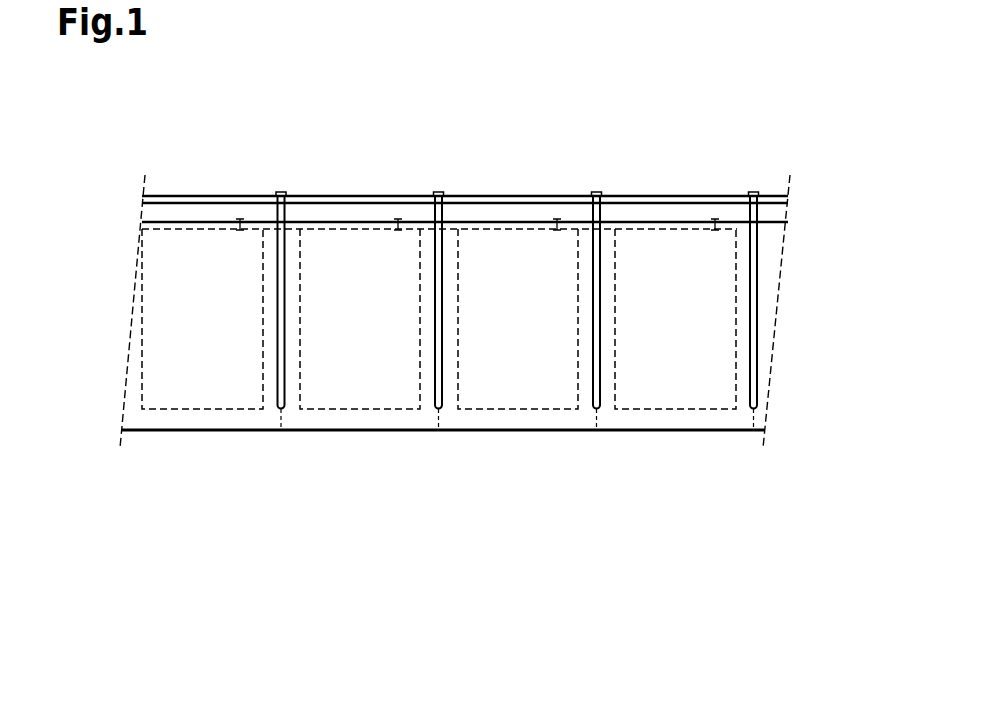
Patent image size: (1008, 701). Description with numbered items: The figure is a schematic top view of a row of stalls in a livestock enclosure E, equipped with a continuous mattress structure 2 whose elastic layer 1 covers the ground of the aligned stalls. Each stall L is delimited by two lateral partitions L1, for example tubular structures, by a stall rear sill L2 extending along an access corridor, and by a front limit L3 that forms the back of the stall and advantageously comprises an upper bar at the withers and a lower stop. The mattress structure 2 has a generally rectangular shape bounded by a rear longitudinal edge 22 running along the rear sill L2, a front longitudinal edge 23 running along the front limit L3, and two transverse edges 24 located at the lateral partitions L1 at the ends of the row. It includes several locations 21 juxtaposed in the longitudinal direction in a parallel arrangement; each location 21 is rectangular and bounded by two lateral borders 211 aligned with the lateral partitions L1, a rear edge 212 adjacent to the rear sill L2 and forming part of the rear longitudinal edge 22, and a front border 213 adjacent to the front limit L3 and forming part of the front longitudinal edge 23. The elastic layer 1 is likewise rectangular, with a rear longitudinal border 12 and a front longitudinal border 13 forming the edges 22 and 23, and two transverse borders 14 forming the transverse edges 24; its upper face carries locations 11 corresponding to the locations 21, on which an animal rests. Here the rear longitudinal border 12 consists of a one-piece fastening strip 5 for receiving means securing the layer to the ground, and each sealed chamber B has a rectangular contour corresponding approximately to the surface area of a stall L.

The front longitudinal edge 23 is at (465, 163).
The front limit L3 is at (465, 163).
The front longitudinal border 13 is at (465, 163).
The front border 213 is at (465, 163).
The livestock enclosure E is at (362, 212).
The sealed chamber B is at (662, 218).
The lateral partition L1 is at (464, 280).
The lateral border 211 is at (277, 262).
The location 21 is at (402, 380).
The location 11 is at (402, 380).
The stall L is at (176, 454).
The stall rear sill L2 is at (443, 476).
The rear longitudinal border 12 is at (443, 476).
The rear edge 212 is at (443, 476).
The rear longitudinal edge 22 is at (443, 476).
The fastening strip 5 is at (443, 476).
The mattress structure 2 is at (443, 476).
The elastic layer 1 is at (387, 452).
The transverse edge 24 is at (456, 311).
The transverse border 14 is at (106, 302).